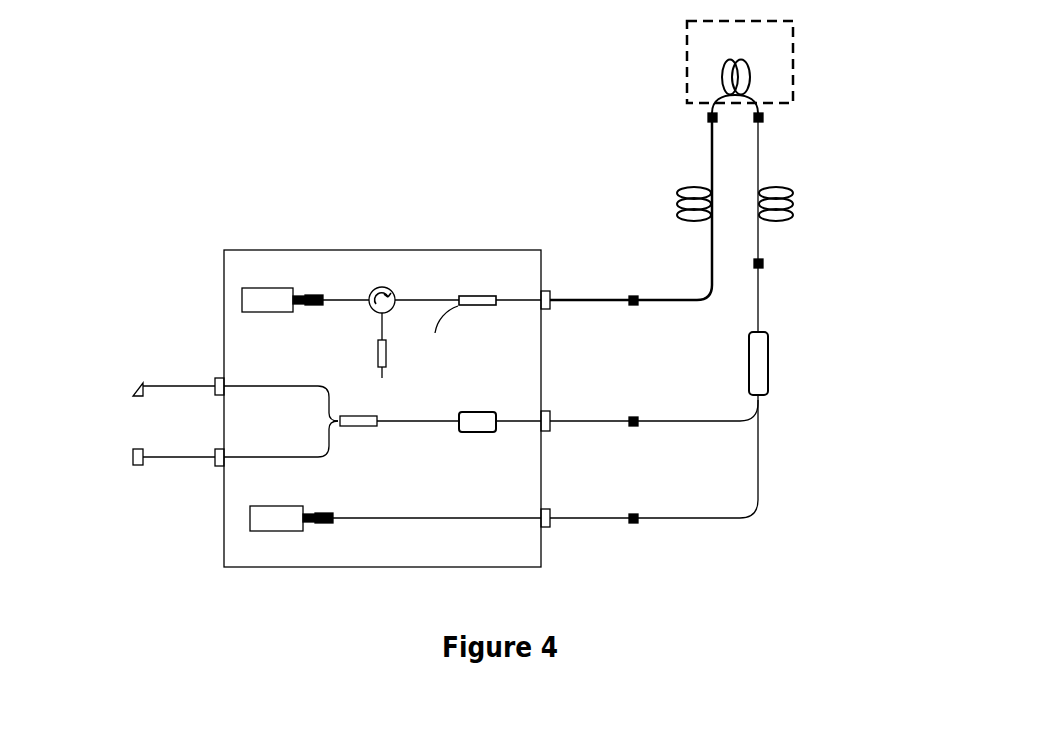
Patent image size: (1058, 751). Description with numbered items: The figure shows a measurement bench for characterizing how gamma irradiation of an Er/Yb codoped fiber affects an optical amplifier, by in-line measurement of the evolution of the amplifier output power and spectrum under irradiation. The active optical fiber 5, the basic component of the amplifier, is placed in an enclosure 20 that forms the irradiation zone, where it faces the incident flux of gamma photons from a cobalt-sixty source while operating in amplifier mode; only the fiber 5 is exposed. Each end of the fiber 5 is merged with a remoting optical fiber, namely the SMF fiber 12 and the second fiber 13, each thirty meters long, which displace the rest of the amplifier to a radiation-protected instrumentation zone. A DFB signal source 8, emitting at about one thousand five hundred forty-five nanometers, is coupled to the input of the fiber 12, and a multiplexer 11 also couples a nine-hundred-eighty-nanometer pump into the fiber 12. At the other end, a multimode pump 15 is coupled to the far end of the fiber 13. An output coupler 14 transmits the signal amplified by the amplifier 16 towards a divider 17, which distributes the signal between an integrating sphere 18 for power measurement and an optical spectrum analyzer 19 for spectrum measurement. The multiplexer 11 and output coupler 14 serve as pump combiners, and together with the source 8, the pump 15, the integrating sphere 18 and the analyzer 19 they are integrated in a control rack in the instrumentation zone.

The optical fiber 5 is at (722, 74).
The 1545-nm source 8 is at (283, 290).
The multiplexer 11 is at (484, 296).
The optical fiber 12 is at (677, 200).
The second fiber 13 is at (795, 205).
The output coupler 14 is at (768, 365).
The multimode pump 15 is at (267, 530).
The amplifier 16 is at (485, 412).
The divider 17 is at (358, 426).
The integrating sphere 18 is at (135, 393).
The optical spectrum analyzer 19 is at (142, 461).
The enclosure 20 is at (687, 44).